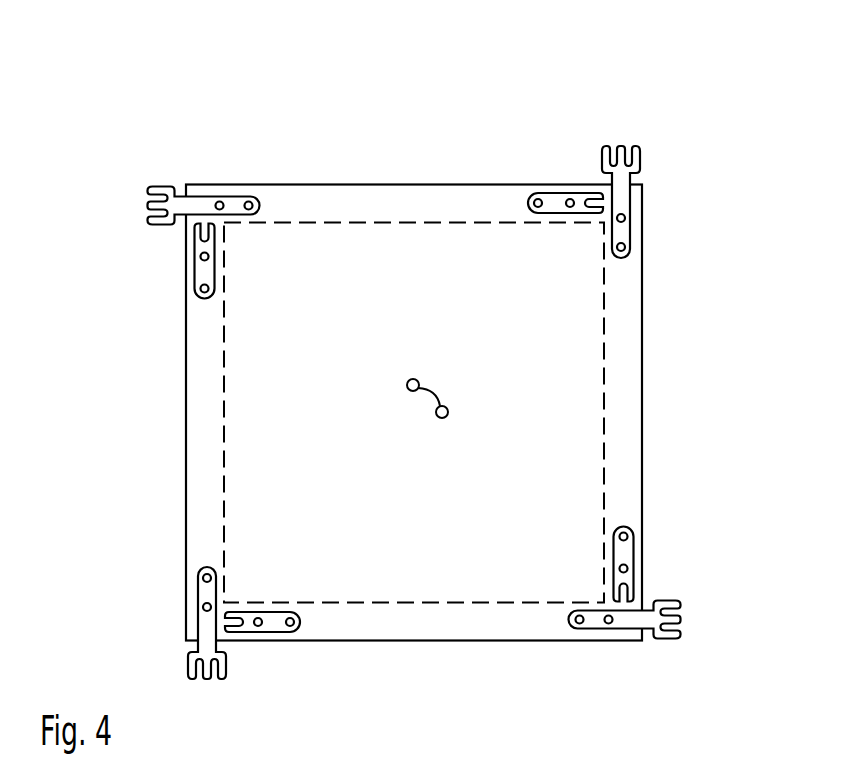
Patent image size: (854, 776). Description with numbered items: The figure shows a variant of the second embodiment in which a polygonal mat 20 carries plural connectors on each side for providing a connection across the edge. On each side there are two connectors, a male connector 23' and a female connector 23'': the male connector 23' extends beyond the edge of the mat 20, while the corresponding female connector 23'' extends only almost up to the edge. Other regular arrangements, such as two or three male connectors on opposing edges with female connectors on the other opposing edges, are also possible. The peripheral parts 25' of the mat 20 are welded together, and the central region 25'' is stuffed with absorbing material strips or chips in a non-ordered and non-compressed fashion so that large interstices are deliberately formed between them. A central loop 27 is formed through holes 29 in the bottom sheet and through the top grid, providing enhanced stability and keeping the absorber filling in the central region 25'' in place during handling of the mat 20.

The polygonal mat 20 is at (448, 391).
The peripheral parts 25' is at (414, 383).
The central region 25'' is at (414, 413).
The male connector 23' is at (429, 410).
The female connector 23'' is at (414, 368).
The central loop 27 is at (435, 392).
The holes 29 is at (436, 416).